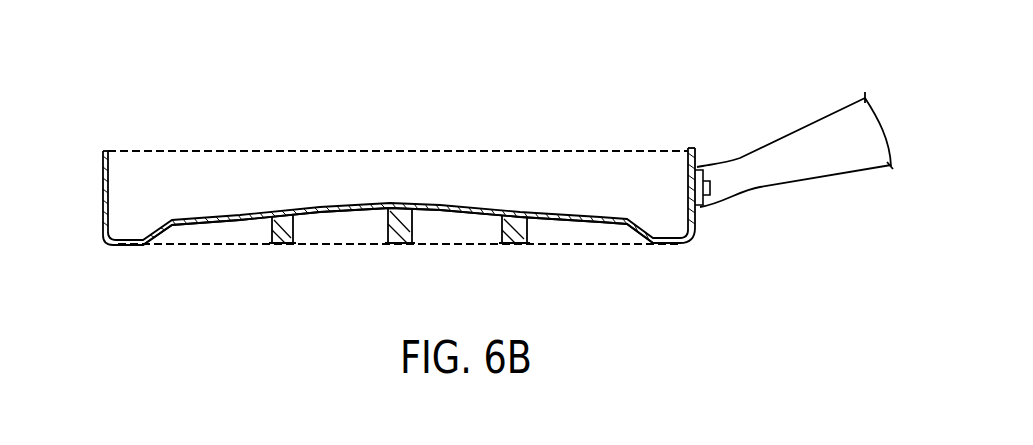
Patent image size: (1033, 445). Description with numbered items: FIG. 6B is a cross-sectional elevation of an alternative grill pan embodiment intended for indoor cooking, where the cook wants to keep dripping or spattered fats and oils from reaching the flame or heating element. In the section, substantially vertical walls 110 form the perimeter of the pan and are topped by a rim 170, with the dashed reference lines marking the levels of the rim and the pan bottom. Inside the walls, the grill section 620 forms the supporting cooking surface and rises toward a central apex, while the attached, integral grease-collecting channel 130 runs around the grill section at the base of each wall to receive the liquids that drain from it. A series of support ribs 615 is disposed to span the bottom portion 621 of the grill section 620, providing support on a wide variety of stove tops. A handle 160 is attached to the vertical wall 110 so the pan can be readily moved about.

The vertical wall 110 is at (104, 181).
The grease-collecting channel 130 is at (119, 238).
The handle 160 is at (780, 133).
The rim 170 is at (105, 151).
The support ribs 615 is at (277, 242).
The grill section 620 is at (360, 196).
The bottom portion 621 is at (598, 244).